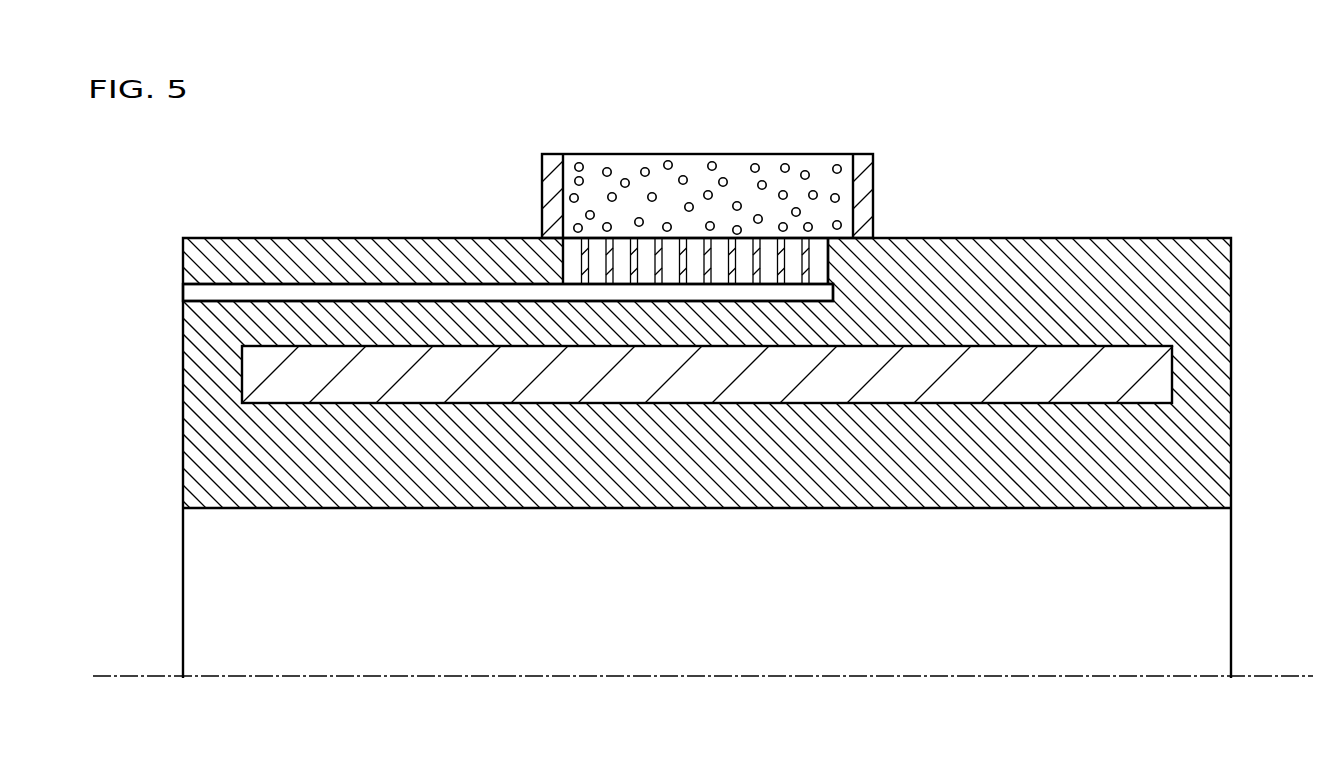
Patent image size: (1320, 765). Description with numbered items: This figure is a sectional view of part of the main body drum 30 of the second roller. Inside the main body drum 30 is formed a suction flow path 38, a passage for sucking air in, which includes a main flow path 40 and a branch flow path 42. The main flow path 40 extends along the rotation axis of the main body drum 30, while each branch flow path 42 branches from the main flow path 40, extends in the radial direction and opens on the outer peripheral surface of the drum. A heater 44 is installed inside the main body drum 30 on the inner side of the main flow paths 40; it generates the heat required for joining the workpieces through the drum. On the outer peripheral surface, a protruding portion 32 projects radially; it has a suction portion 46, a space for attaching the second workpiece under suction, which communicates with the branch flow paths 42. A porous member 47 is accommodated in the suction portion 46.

The main body drum 30 is at (970, 253).
The protruding portion 32 is at (865, 170).
The suction flow path 38 is at (523, 183).
The main flow path 40 is at (435, 294).
The branch flow path 42 is at (566, 284).
The heater 44 is at (765, 387).
The suction portion 46 is at (581, 150).
The porous member 47 is at (733, 173).